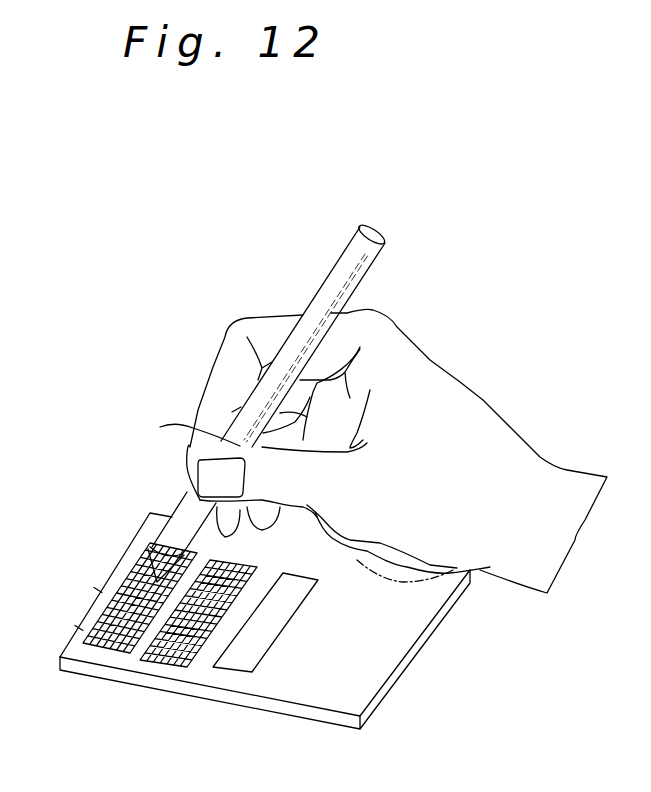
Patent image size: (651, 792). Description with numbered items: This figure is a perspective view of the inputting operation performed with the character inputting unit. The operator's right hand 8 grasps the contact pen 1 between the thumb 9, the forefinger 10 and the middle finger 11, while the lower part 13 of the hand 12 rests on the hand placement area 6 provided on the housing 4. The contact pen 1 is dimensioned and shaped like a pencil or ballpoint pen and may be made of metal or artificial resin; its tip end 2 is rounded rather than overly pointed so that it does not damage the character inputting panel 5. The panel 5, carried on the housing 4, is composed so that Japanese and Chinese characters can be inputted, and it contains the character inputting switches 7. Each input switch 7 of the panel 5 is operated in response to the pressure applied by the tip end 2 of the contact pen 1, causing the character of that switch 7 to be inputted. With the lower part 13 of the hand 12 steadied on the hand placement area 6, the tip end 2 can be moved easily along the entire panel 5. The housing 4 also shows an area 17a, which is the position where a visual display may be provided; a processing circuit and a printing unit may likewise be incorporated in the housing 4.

The contact pen 1 is at (380, 253).
The tip end 2 is at (140, 598).
The housing 4 is at (377, 675).
The character inputting panel 5 is at (157, 668).
The hand placement area 6 is at (402, 582).
The character inputting switches 7 is at (77, 630).
The right hand 8 is at (463, 413).
The thumb 9 is at (173, 425).
The forefinger 10 is at (268, 333).
The middle finger 11 is at (173, 510).
The hand 12 is at (393, 557).
The lower part of the hand 13 is at (363, 557).
The area for visual display 17a is at (240, 667).